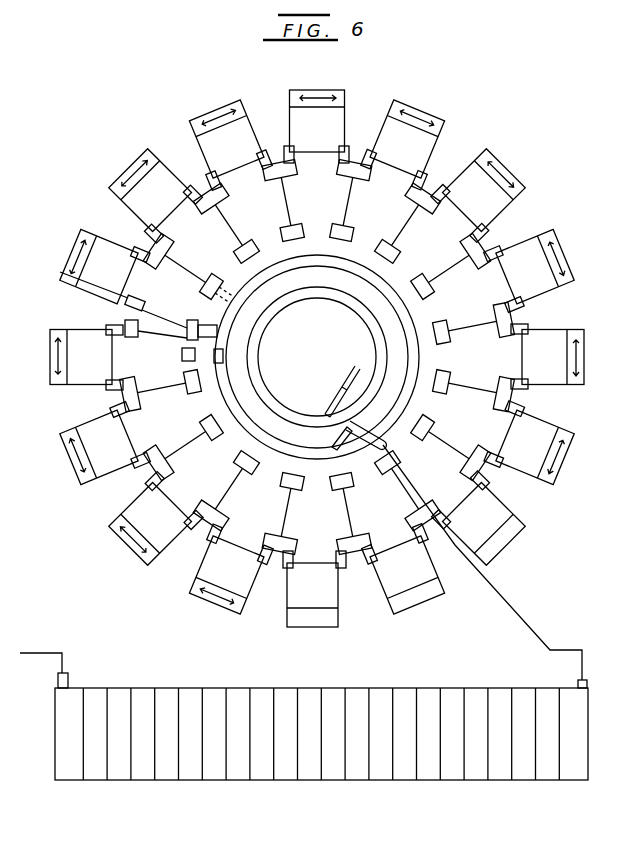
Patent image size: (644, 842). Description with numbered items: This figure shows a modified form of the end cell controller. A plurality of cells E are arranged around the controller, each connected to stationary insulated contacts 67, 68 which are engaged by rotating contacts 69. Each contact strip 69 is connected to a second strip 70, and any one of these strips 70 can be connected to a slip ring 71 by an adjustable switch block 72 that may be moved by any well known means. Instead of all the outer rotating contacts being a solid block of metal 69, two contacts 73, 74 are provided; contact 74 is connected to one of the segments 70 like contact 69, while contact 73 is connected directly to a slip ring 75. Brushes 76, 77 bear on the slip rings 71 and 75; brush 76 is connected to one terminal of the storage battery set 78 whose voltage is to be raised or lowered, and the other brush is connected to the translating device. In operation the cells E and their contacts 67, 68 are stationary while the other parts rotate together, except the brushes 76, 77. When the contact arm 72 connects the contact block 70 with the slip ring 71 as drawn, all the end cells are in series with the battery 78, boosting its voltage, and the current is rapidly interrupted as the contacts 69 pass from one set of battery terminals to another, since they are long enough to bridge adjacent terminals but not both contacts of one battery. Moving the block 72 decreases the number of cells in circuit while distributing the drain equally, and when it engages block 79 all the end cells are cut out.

The cells E is at (313, 84).
The insulated contact 67 is at (297, 165).
The insulated contact 68 is at (341, 148).
The rotating contact 69 is at (283, 192).
The second strip 70 is at (237, 246).
The slip ring 71 is at (238, 252).
The adjustable switch block 72 is at (215, 294).
The contact 73 is at (127, 338).
The contact 74 is at (134, 296).
The slip ring 75 is at (262, 368).
The brush 76 is at (330, 437).
The brush 77 is at (333, 398).
The storage battery set 78 is at (470, 692).
The block 79 is at (183, 357).